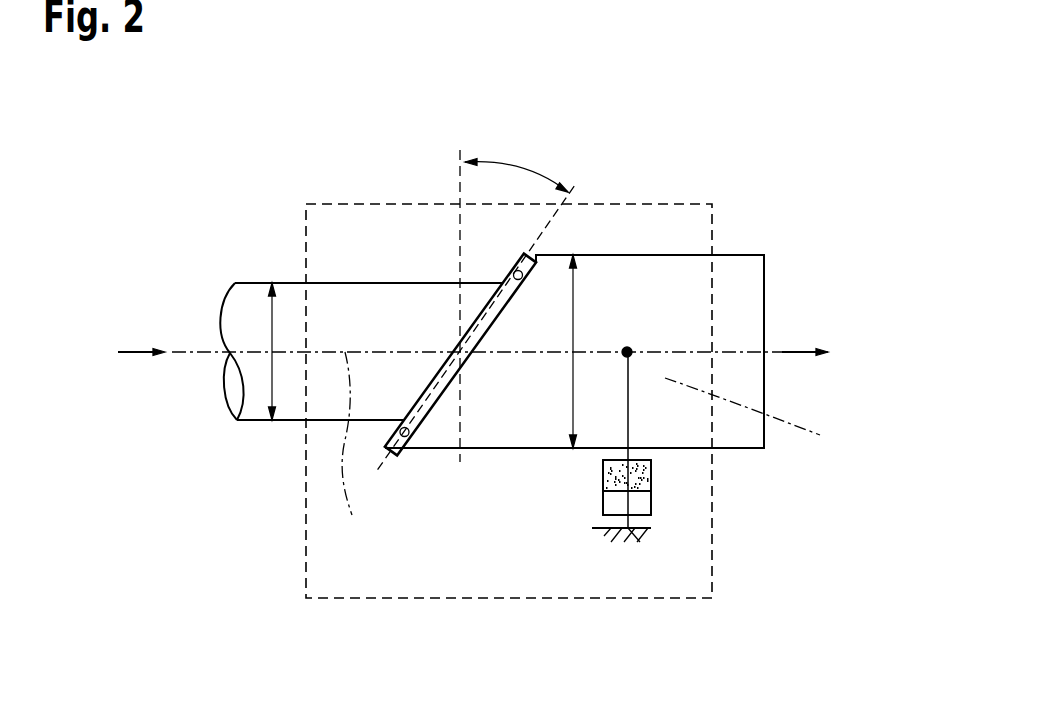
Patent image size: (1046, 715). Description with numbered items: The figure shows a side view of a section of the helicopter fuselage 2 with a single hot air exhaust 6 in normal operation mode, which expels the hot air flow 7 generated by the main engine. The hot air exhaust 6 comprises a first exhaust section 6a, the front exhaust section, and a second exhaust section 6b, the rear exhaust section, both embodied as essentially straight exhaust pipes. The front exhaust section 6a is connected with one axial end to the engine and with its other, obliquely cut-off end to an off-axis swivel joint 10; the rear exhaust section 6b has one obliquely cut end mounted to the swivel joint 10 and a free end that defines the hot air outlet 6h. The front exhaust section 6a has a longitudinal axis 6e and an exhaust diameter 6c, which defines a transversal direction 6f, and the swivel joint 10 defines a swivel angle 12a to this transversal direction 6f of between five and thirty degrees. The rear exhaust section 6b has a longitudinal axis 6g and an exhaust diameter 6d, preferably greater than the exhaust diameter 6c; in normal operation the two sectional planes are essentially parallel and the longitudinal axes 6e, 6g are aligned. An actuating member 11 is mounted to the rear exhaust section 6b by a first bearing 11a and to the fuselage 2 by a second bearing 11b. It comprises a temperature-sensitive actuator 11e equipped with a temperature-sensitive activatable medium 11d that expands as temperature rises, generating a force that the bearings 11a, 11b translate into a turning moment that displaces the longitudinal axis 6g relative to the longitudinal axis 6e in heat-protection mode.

The fuselage 2 is at (306, 541).
The hot air exhaust 6 is at (762, 210).
The first exhaust section 6a is at (253, 283).
The second exhaust section 6b is at (745, 256).
The exhaust diameter 6c is at (272, 380).
The exhaust diameter 6d is at (573, 390).
The longitudinal axis 6e is at (357, 454).
The transversal direction 6f is at (459, 225).
The longitudinal axis 6g is at (759, 420).
The hot air outlet 6h is at (772, 373).
The hot air flow 7 is at (132, 352).
The off-axis swivel joint 10 is at (460, 365).
The actuating member 11 is at (657, 473).
The first bearing 11a is at (628, 350).
The second bearing 11b is at (622, 537).
The temperature-sensitive activatable medium 11d is at (647, 480).
The actuator 11e is at (603, 497).
The swivel angle 12a is at (520, 170).